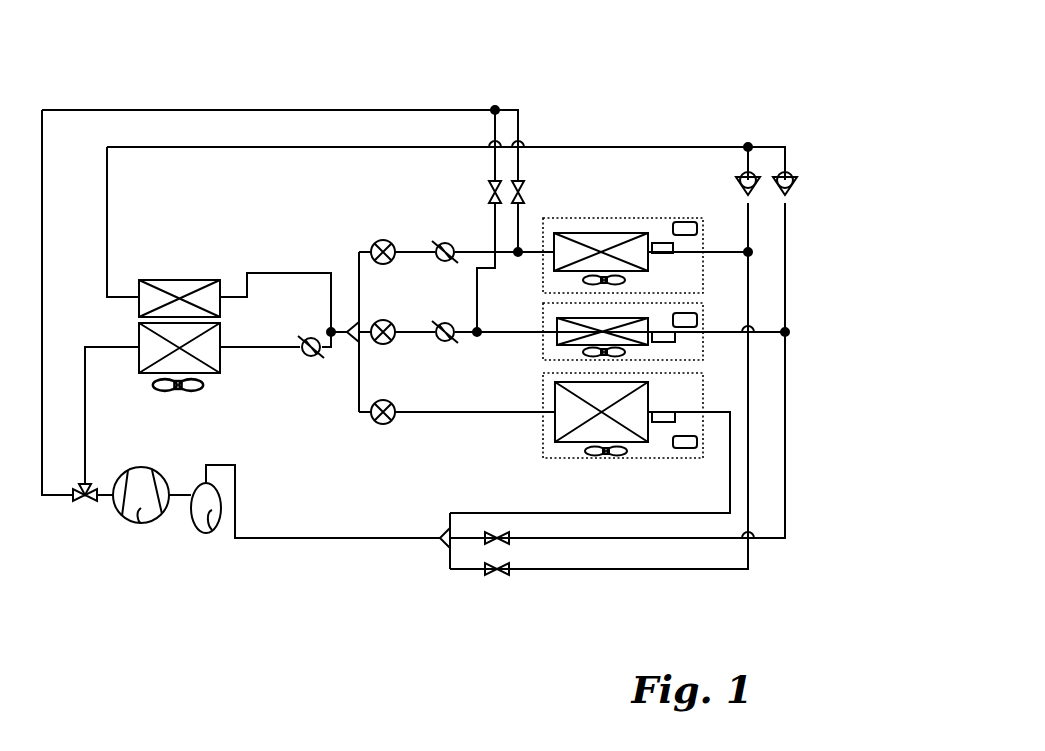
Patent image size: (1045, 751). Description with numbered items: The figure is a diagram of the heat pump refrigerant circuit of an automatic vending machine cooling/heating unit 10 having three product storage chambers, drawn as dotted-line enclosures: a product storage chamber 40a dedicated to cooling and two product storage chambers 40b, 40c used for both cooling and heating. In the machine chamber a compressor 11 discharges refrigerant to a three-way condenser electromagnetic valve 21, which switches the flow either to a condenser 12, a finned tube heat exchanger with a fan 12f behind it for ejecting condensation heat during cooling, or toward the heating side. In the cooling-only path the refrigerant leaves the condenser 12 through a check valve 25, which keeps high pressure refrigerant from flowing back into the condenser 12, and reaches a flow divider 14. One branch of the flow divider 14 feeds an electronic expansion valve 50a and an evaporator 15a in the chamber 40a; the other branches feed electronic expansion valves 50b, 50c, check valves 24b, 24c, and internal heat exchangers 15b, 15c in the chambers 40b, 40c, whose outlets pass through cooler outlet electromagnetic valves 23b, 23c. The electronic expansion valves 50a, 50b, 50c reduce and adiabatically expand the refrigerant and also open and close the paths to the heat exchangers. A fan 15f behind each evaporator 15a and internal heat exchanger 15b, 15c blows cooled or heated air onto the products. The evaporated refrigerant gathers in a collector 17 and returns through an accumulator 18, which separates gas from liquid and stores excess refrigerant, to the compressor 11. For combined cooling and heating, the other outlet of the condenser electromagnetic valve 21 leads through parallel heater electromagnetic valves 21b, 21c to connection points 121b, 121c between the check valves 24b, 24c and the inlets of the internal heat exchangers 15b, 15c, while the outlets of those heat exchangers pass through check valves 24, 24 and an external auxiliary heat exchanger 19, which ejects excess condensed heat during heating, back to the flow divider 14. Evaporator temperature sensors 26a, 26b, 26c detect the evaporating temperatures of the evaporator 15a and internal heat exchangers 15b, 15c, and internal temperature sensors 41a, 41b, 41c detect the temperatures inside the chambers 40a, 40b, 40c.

The cooling/heating unit 10 is at (233, 683).
The compressor 11 is at (150, 522).
The condenser 12 is at (213, 366).
The fan 12f is at (165, 393).
The flow divider 14 is at (346, 336).
The evaporator 15a is at (592, 428).
The internal heat exchanger 15b is at (565, 336).
The internal heat exchanger 15c is at (598, 238).
The fan 15f is at (583, 281).
The collector 17 is at (440, 542).
The accumulator 18 is at (213, 530).
The external auxiliary heat exchanger 19 is at (186, 290).
The condenser electromagnetic valve 21 is at (80, 505).
The heater electromagnetic valve 21b is at (489, 191).
The heater electromagnetic valve 21c is at (540, 165).
The cooler outlet electromagnetic valve 23b is at (512, 545).
The cooler outlet electromagnetic valve 23c is at (497, 576).
The check valve 24 is at (740, 178).
The check valve 24b is at (440, 324).
The check valve 24c is at (440, 244).
The check valve 25 is at (308, 338).
The evaporator temperature sensor 26a is at (662, 412).
The evaporator temperature sensor 26b is at (676, 342).
The evaporator temperature sensor 26c is at (660, 242).
The product storage chamber 40a is at (643, 453).
The product storage chamber 40b is at (698, 346).
The product storage chamber 40c is at (700, 256).
The internal temperature sensor 41a is at (698, 447).
The internal temperature sensor 41b is at (699, 319).
The internal temperature sensor 41c is at (688, 221).
The electronic expansion valve 50a is at (383, 400).
The electronic expansion valve 50b is at (383, 320).
The electronic expansion valve 50c is at (383, 240).
The connection point 121b is at (477, 340).
The connection point 121c is at (496, 266).